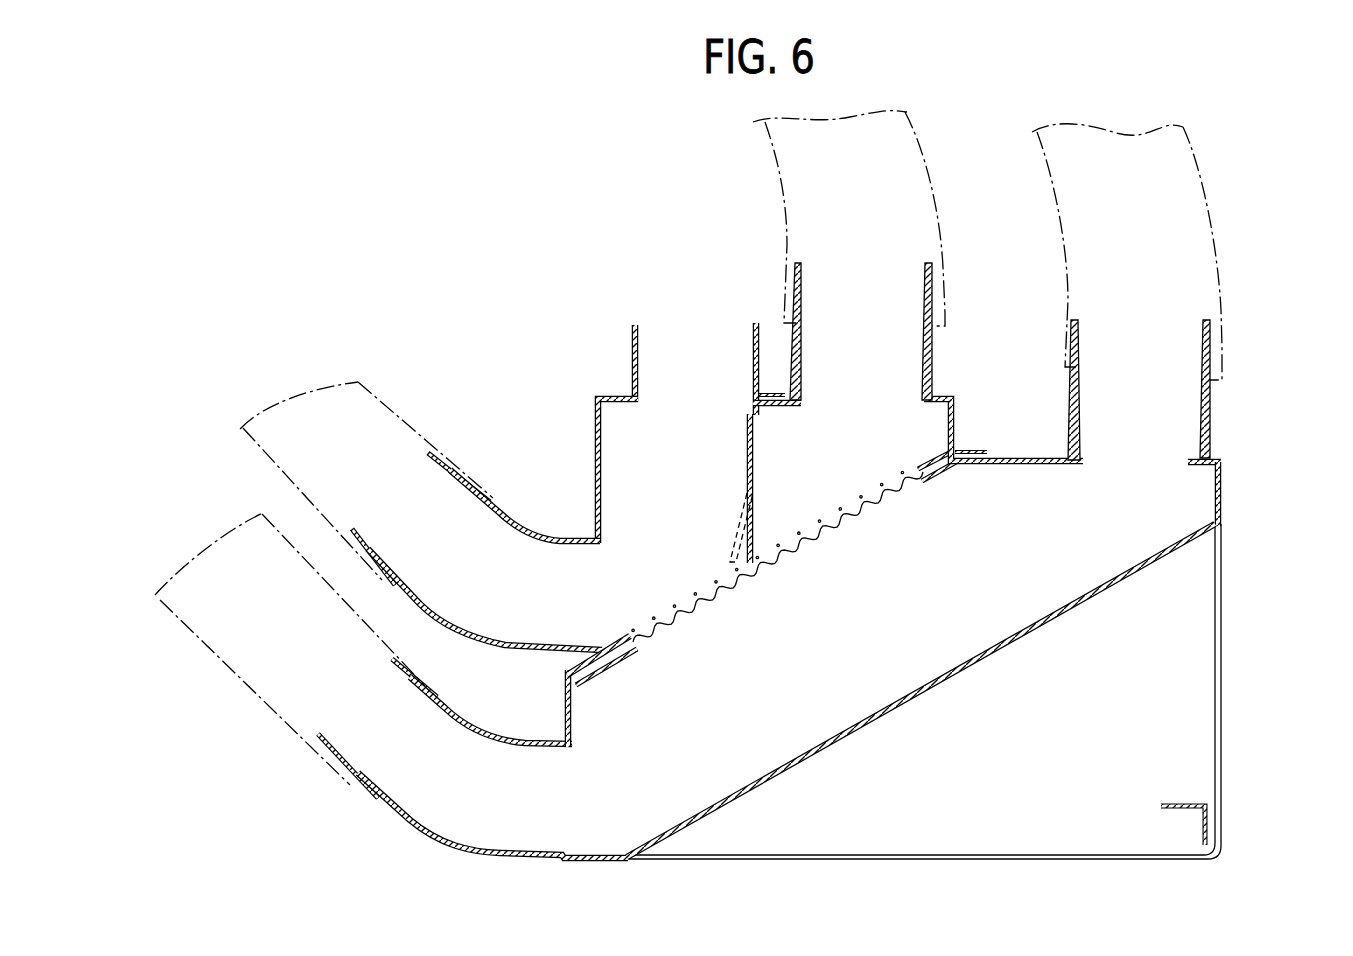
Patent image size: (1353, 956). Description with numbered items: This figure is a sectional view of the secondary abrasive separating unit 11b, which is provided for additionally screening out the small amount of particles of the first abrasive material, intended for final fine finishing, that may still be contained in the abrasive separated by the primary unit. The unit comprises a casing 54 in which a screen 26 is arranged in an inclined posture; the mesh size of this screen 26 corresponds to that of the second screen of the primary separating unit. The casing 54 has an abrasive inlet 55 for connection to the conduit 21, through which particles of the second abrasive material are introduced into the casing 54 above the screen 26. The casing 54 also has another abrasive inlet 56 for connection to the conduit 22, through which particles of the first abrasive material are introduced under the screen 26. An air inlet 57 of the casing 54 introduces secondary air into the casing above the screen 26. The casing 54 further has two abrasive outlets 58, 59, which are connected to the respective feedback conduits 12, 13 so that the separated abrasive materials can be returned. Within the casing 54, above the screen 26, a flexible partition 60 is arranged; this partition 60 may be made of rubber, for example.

The secondary abrasive separating unit 11b is at (563, 291).
The feedback conduit 12 is at (206, 646).
The feedback conduit 13 is at (236, 432).
The conduit 21 is at (780, 193).
The conduit 22 is at (1205, 200).
The screen 26 is at (853, 512).
The casing 54 is at (596, 432).
The abrasive inlet 55 is at (933, 288).
The abrasive inlet 56 is at (1211, 348).
The air inlet 57 is at (660, 356).
The abrasive outlet 58 is at (513, 522).
The abrasive outlet 59 is at (408, 824).
The flexible partition 60 is at (748, 489).